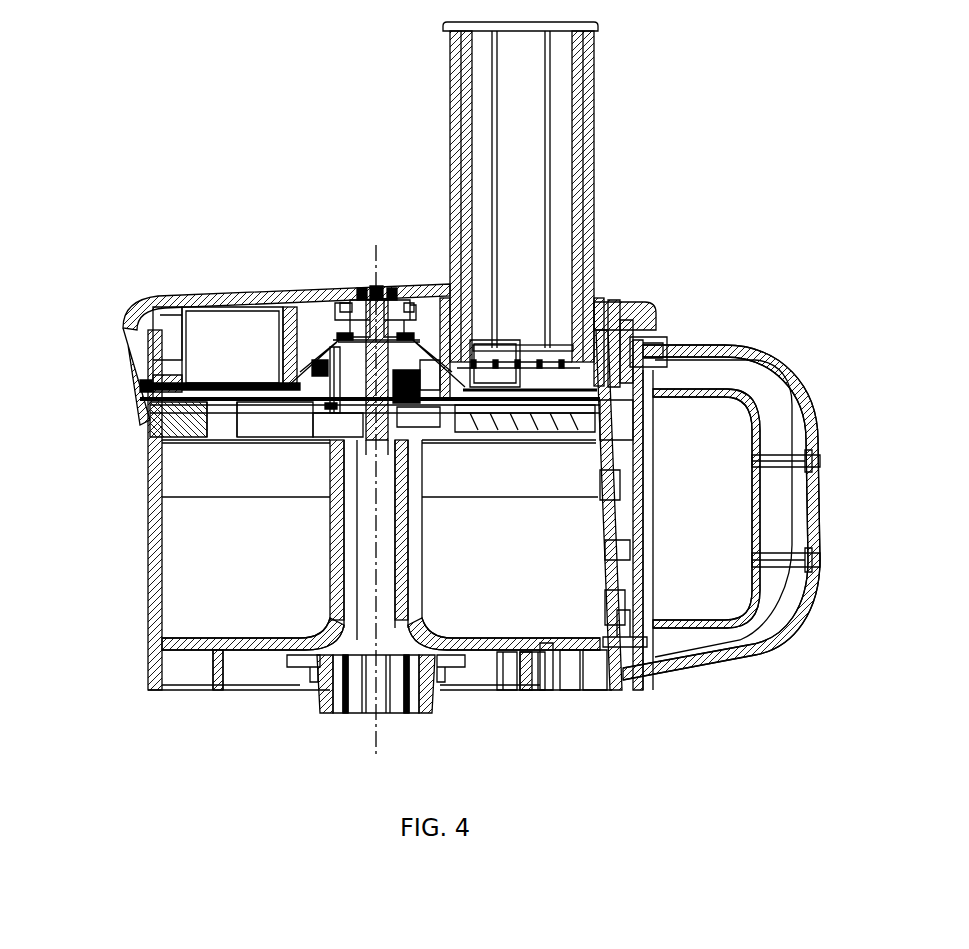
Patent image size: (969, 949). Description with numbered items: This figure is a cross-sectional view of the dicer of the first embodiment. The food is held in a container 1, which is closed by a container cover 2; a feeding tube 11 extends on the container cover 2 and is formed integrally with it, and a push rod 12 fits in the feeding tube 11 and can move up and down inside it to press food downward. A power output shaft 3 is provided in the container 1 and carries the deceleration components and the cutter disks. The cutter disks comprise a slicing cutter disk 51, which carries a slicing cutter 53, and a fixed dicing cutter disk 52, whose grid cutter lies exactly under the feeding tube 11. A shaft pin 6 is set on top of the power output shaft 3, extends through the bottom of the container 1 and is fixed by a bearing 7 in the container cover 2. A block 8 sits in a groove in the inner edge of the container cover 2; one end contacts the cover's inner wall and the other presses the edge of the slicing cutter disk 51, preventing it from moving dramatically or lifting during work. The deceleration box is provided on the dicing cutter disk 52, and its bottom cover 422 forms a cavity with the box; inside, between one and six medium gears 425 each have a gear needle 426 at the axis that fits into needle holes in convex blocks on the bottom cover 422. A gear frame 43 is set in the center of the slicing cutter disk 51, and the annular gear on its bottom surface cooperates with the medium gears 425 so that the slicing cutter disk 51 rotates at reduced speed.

The container 1 is at (190, 598).
The container cover 2 is at (190, 297).
The power output shaft 3 is at (363, 682).
The shaft pin 6 is at (375, 320).
The bearing 7 is at (362, 292).
The block 8 is at (150, 388).
The feeding tube 11 is at (566, 128).
The push rod 12 is at (520, 55).
The gear frame 43 is at (320, 348).
The slicing cutter disk 51 is at (172, 383).
The dicing cutter disk 52 is at (182, 418).
The slicing cutter 53 is at (548, 350).
The bottom cover 422 is at (422, 413).
The medium gear 425 is at (318, 385).
The gear needle 426 is at (232, 440).